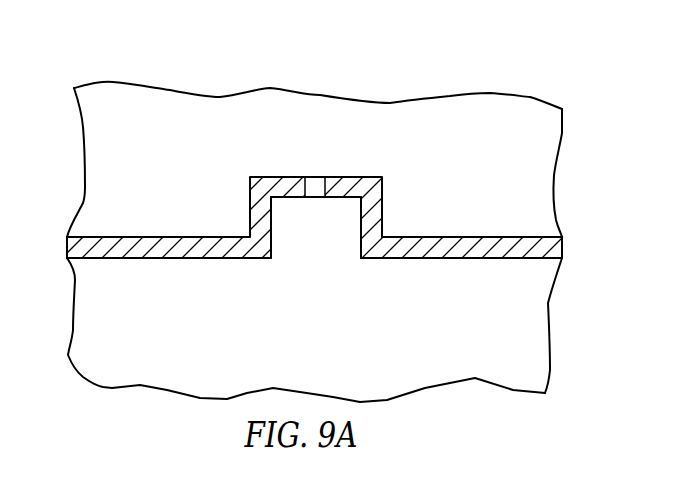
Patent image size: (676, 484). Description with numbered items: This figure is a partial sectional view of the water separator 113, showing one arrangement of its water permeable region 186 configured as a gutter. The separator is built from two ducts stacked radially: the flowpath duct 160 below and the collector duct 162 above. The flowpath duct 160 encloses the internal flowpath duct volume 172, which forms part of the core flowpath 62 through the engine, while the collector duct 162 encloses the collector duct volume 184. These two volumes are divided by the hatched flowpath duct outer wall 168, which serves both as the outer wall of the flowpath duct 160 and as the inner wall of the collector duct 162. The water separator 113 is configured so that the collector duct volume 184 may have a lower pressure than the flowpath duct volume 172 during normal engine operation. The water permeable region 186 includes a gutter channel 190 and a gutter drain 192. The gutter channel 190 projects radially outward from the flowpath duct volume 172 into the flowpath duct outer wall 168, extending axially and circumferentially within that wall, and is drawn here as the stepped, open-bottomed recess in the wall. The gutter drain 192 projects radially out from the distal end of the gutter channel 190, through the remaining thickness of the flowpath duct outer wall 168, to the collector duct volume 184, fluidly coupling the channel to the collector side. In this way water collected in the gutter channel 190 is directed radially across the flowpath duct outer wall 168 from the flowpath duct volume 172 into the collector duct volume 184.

The water separator 113 is at (410, 88).
The collector duct 162 is at (565, 130).
The collector duct volume 184 is at (182, 155).
The flowpath duct outer wall 168 is at (125, 263).
The gutter drain 192 is at (315, 188).
The gutter channel 190 is at (322, 249).
The water permeable region 186 is at (307, 282).
The flowpath duct 160 is at (560, 331).
The core flowpath 62 is at (189, 341).
The flowpath duct volume 172 is at (153, 357).